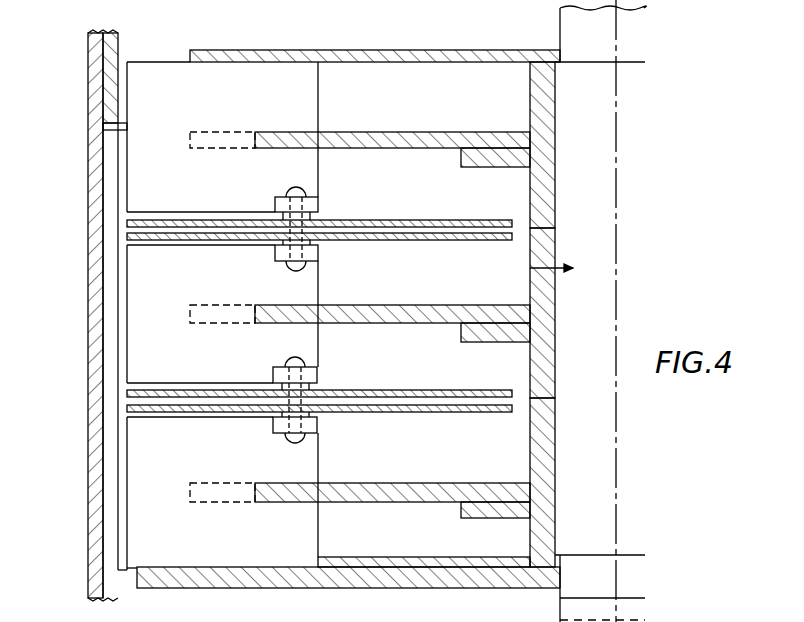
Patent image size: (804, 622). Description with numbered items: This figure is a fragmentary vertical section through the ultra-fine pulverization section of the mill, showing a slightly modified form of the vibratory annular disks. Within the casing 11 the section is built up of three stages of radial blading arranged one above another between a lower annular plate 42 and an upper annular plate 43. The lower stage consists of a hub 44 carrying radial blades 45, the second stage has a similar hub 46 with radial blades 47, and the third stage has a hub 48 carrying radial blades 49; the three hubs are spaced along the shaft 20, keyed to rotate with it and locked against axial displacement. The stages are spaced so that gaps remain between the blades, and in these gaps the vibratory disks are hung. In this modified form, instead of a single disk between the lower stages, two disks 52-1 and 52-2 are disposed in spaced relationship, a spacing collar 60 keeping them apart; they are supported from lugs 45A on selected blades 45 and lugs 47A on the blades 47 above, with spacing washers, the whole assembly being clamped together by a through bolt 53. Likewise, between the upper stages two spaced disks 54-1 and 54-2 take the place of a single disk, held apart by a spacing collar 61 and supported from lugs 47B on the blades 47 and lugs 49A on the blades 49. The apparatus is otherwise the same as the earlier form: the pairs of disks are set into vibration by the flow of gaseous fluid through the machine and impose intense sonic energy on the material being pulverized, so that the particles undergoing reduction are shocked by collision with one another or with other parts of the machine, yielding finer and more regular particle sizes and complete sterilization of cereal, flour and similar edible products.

The casing 11 is at (88, 90).
The shaft 20 is at (530, 268).
The lower annular plate 42 is at (276, 587).
The upper annular plate 43 is at (448, 50).
The hub 44 is at (540, 453).
The radial blades 45 is at (308, 528).
The lugs 45A is at (310, 425).
The hub 46 is at (540, 362).
The radial blades 47 is at (310, 285).
The lugs 47A is at (317, 368).
The lugs 47B is at (310, 253).
The hub 48 is at (540, 97).
The radial blades 49 is at (306, 99).
The lugs 49A is at (318, 197).
The disk 52-1 is at (127, 412).
The disk 52-2 is at (127, 393).
The through bolt 53 is at (302, 440).
The disk 54-1 is at (127, 237).
The disk 54-2 is at (127, 223).
The spacing collar 60 is at (310, 400).
The spacing collar 61 is at (310, 228).